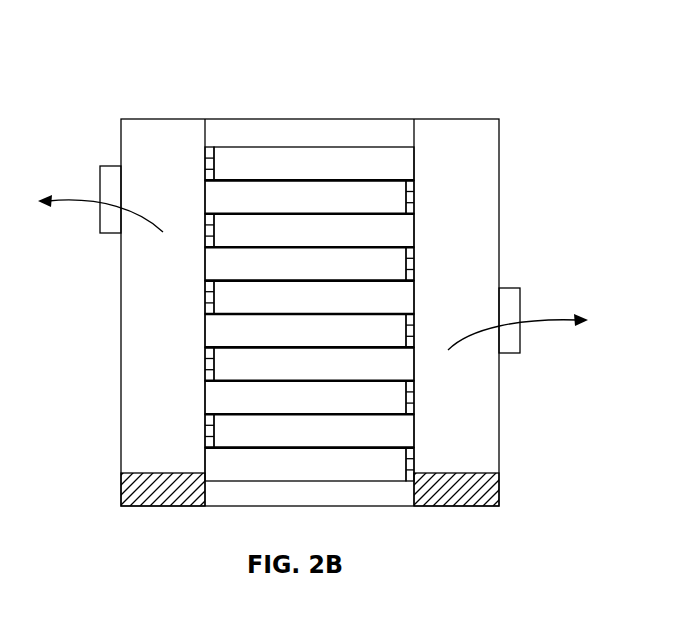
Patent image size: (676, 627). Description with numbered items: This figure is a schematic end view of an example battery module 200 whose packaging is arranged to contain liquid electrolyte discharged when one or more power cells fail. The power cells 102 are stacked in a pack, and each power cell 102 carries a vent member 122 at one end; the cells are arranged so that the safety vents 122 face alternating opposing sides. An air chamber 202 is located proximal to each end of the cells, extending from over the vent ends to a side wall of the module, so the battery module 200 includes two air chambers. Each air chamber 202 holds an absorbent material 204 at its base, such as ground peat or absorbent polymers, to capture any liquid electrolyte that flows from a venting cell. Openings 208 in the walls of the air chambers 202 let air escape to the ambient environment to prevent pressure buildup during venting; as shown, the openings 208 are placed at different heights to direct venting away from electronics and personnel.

The battery module 200 is at (143, 68).
The power cell 102 is at (310, 158).
The vent member 122 is at (417, 181).
The air chamber 202 is at (488, 226).
The absorbent material 204 is at (450, 497).
The opening 208 is at (100, 178).